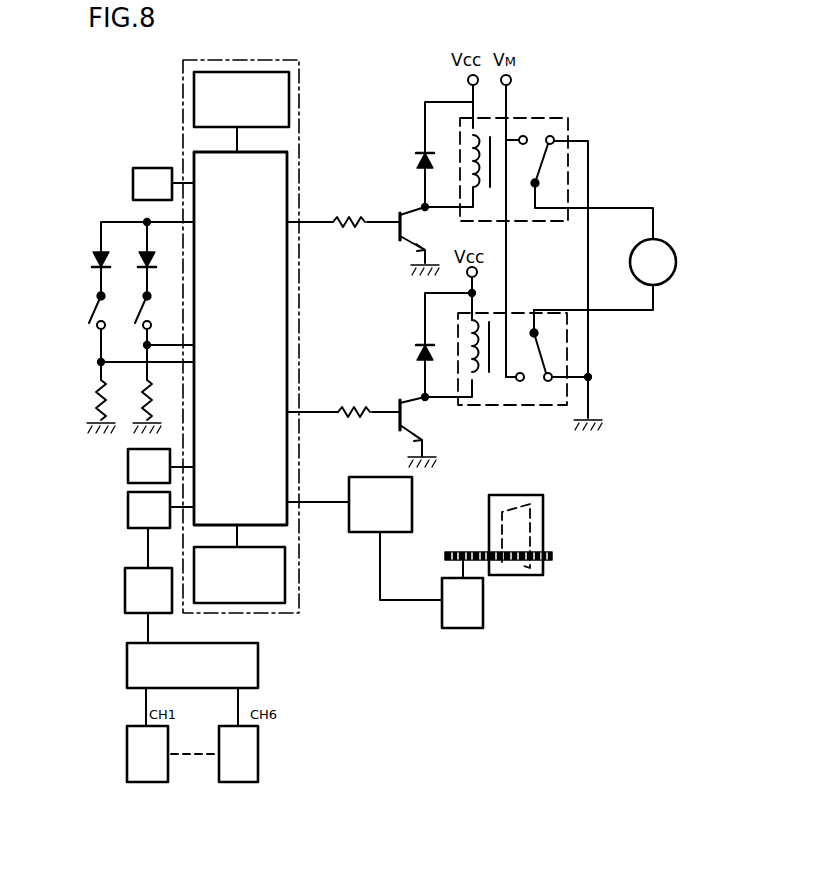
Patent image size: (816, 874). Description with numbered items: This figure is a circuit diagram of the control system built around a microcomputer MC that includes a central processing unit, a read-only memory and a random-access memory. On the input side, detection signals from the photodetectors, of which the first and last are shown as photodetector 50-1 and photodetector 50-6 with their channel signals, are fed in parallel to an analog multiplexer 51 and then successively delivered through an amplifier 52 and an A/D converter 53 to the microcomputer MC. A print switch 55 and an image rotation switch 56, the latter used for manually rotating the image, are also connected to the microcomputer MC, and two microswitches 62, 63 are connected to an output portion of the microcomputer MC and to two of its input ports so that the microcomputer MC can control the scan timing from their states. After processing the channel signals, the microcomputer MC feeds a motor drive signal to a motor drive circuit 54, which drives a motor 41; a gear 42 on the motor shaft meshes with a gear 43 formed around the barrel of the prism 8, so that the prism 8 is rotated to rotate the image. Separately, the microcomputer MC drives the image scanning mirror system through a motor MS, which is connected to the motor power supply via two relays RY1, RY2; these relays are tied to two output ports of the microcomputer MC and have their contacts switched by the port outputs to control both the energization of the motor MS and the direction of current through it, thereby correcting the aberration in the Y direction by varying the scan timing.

The microcomputer MC is at (183, 112).
The image rotation switch 56 is at (133, 183).
The microswitch 63 is at (85, 362).
The microswitch 62 is at (158, 362).
The print switch 55 is at (128, 467).
The A/D converter 53 is at (128, 507).
The amplifier 52 is at (125, 592).
The analog multiplexer 51 is at (258, 661).
The photodetector 50-1 is at (148, 770).
The photodetector 50-6 is at (248, 772).
The motor drive circuit 54 is at (368, 520).
The motor 41 is at (473, 603).
The gear 42 is at (447, 552).
The prism 8 is at (544, 500).
The gear 43 is at (552, 558).
The motor MS is at (667, 279).
The relay RY1 is at (514, 158).
The relay RY2 is at (512, 348).